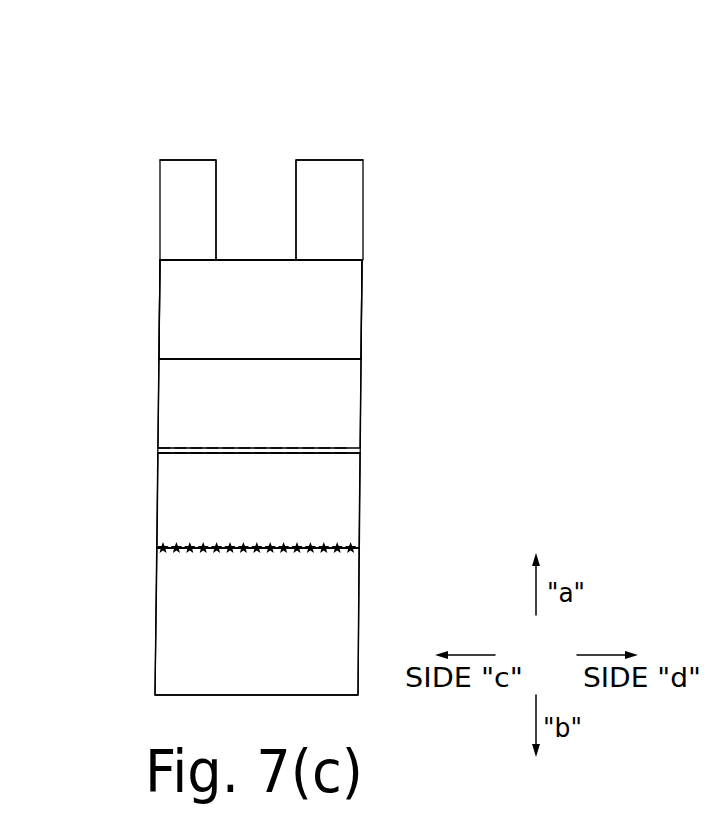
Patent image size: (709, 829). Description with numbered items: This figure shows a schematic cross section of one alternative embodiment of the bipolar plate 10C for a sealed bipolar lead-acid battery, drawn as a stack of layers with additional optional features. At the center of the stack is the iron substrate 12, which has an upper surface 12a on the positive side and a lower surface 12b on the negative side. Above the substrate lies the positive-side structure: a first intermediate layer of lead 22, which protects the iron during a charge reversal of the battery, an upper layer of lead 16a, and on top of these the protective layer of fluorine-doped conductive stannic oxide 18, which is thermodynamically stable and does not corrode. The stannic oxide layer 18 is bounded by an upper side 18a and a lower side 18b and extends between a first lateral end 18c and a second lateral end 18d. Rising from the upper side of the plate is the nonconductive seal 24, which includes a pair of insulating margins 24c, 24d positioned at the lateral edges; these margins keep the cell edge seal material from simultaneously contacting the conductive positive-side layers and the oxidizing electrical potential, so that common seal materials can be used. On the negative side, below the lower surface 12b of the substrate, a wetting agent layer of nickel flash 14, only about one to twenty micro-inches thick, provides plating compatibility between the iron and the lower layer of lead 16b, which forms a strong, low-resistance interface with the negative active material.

The bipolar plate 10C is at (258, 376).
The insulating margin 24c is at (145, 165).
The insulating margin 24d is at (374, 166).
The nonconductive seal 24 is at (296, 232).
The protective layer of fluorine-doped conductive stannic oxide 18 is at (260, 309).
The upper side of stannic oxide layer 18a is at (337, 260).
The lower side of stannic oxide layer 18b is at (180, 360).
The first lateral end of stannic oxide layer 18c is at (160, 290).
The second lateral end of stannic oxide layer 18d is at (363, 298).
The upper layer of lead 16a is at (259, 403).
The first intermediate layer of lead 22 is at (280, 451).
The substrate 12 is at (258, 500).
The upper surface of substrate 12a is at (330, 455).
The lower surface of substrate 12b is at (328, 548).
The wetting agent layer of nickel flash 14 is at (280, 549).
The lower layer of lead 16b is at (257, 621).